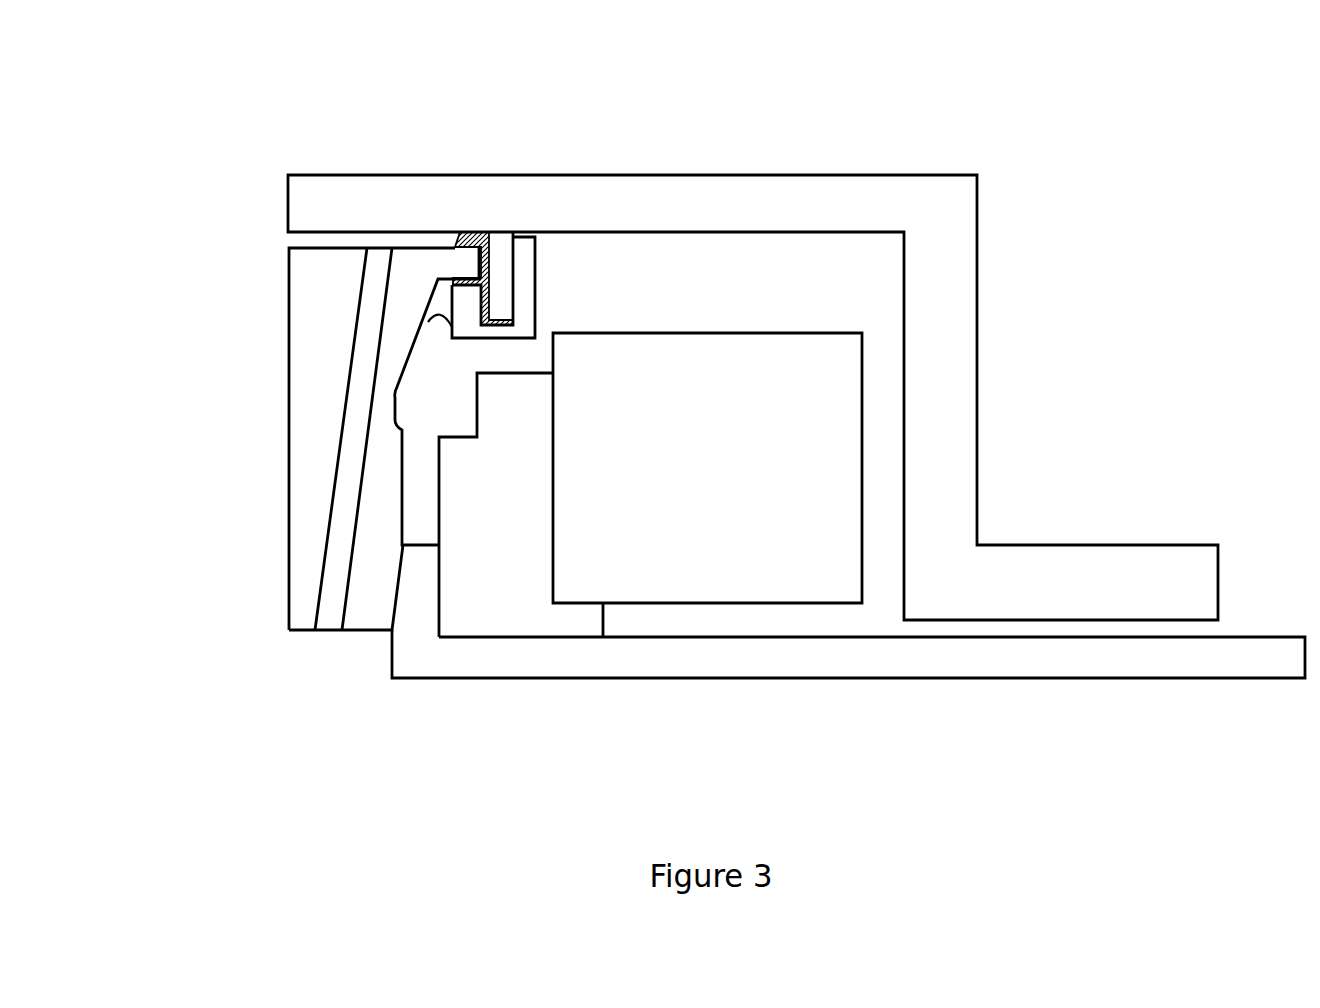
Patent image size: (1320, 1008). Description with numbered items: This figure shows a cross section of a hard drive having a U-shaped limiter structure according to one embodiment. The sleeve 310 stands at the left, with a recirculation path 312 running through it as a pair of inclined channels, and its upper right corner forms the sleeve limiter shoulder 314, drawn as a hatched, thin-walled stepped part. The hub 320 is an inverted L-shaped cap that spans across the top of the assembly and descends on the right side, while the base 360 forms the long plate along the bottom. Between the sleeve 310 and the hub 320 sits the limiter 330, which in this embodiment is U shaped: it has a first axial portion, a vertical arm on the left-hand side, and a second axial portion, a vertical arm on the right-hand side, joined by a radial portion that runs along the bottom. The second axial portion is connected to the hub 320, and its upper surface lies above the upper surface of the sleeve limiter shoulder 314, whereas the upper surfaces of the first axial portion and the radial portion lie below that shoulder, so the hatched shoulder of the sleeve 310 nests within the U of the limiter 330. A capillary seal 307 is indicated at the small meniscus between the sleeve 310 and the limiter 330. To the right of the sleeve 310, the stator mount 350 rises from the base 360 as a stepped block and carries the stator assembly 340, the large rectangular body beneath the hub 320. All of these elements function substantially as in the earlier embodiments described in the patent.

The capillary seal 307 is at (435, 317).
The sleeve 310 is at (300, 522).
The recirculation path 312 is at (332, 603).
The sleeve limiter shoulder 314 is at (458, 263).
The hub 320 is at (962, 317).
The limiter 330 is at (525, 289).
The stator assembly 340 is at (688, 494).
The stator mount 350 is at (481, 534).
The base 360 is at (998, 650).